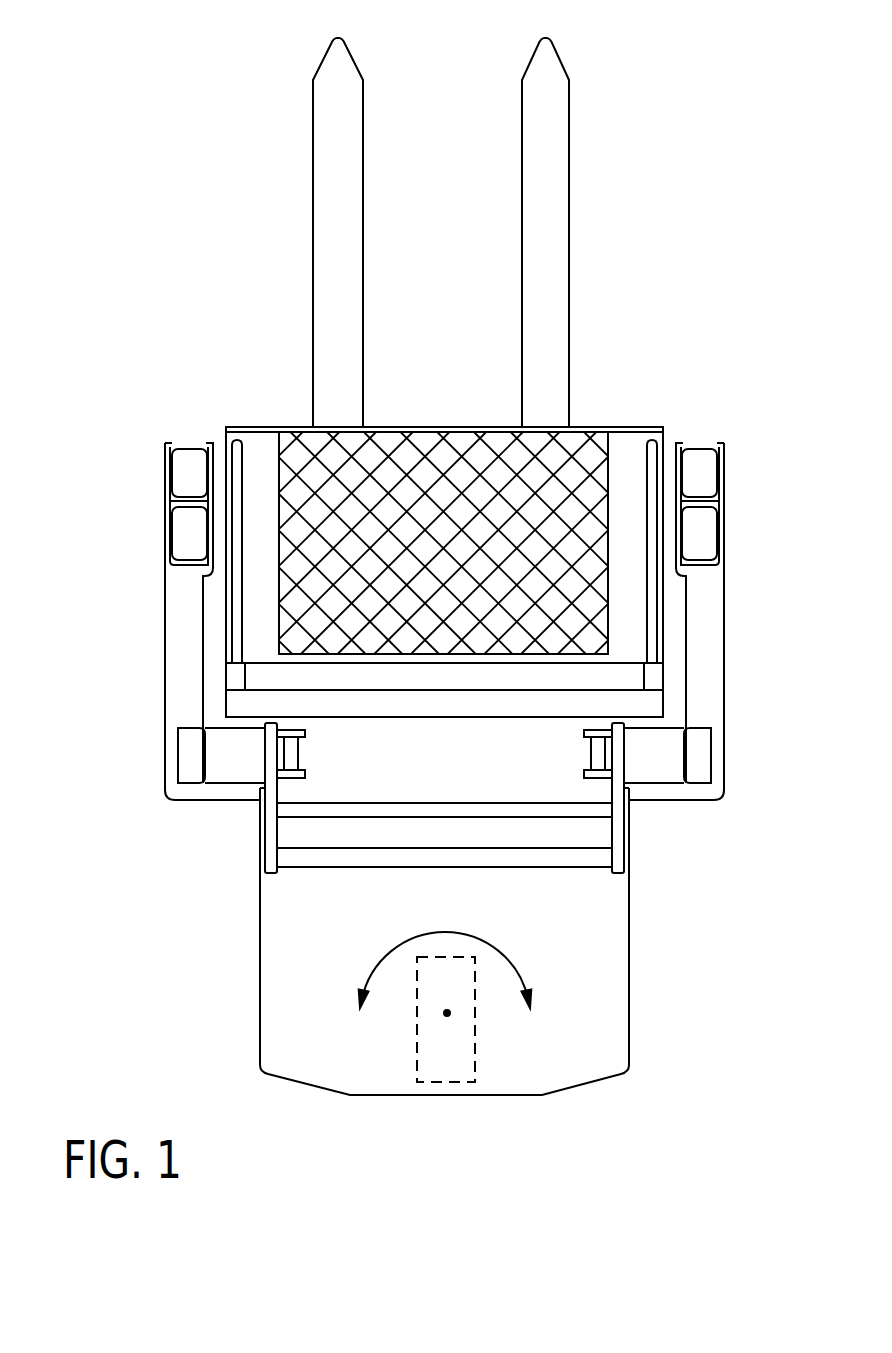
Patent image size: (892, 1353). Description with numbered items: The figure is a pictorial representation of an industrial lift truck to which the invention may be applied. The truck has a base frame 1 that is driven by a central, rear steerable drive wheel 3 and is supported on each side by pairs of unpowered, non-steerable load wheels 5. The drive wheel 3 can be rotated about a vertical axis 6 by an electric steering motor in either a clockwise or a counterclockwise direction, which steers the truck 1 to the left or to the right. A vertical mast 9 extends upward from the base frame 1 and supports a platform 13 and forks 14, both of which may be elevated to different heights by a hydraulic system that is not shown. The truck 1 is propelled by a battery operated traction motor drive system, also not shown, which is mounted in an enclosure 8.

The base frame 1 is at (260, 967).
The drive wheel 3 is at (417, 1037).
The load wheels 5 is at (188, 527).
The vertical axis 6 is at (447, 1013).
The enclosure 8 is at (630, 968).
The vertical mast 9 is at (292, 775).
The platform 13 is at (497, 452).
The forks 14 is at (522, 162).